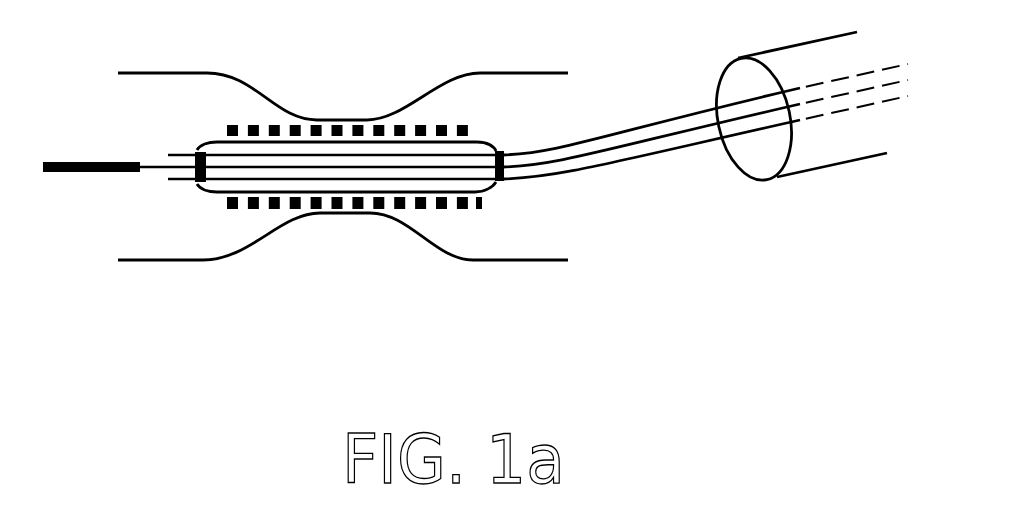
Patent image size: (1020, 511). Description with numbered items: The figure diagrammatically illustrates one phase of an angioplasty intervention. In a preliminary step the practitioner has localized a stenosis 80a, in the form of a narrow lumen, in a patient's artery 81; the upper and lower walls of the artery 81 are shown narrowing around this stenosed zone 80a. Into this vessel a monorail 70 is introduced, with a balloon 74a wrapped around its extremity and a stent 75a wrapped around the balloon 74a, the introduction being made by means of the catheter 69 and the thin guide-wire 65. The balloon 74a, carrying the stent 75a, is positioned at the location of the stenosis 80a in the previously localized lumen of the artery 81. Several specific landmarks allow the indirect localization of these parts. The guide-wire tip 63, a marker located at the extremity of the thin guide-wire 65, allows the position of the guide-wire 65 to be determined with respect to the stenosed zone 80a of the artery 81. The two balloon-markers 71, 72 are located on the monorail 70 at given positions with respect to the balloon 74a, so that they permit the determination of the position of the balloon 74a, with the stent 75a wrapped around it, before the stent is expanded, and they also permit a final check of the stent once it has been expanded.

The guide-wire tip 63 is at (92, 172).
The thin guide-wire 65 is at (665, 135).
The catheter 69 is at (832, 167).
The monorail 70 is at (623, 165).
The balloon-marker 71 is at (197, 184).
The balloon-marker 72 is at (501, 186).
The balloon 74a is at (490, 188).
The stent 75a is at (398, 127).
The stenosis 80a is at (343, 108).
The artery 81 is at (148, 262).